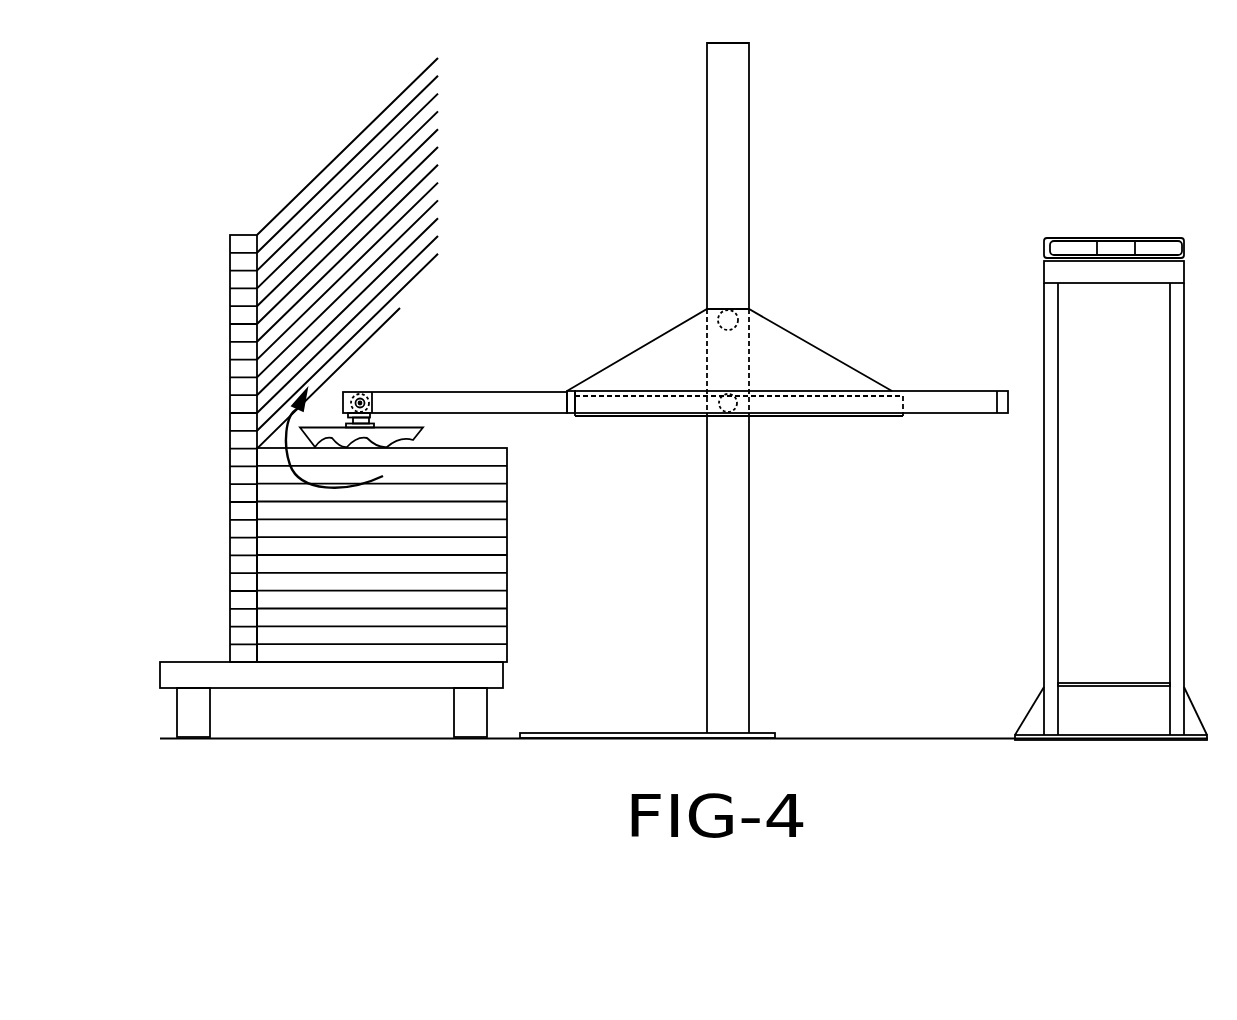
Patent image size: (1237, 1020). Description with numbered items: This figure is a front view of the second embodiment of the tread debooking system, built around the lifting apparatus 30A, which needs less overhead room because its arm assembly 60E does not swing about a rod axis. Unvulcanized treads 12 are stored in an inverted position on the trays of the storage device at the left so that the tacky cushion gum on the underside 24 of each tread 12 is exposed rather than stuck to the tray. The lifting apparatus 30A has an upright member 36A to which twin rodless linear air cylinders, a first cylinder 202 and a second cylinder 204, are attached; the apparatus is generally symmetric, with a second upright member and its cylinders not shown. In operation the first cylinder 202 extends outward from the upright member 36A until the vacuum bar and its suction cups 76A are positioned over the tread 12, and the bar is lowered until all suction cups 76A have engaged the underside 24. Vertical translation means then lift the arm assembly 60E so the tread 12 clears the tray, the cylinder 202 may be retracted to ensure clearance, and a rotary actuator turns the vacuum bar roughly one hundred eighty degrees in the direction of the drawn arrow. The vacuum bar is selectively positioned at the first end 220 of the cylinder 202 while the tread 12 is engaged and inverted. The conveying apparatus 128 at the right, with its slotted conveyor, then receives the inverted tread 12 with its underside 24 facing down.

The tread 12 is at (403, 437).
The underside 24 is at (312, 428).
The first end 220 is at (366, 402).
The suction cup 76A is at (374, 421).
The first cylinder 202 is at (555, 408).
The second cylinder 204 is at (947, 403).
The arm assembly 60E is at (828, 420).
The upright member 36A is at (735, 155).
The lifting apparatus 30A is at (767, 628).
The conveying apparatus 128 is at (1024, 563).